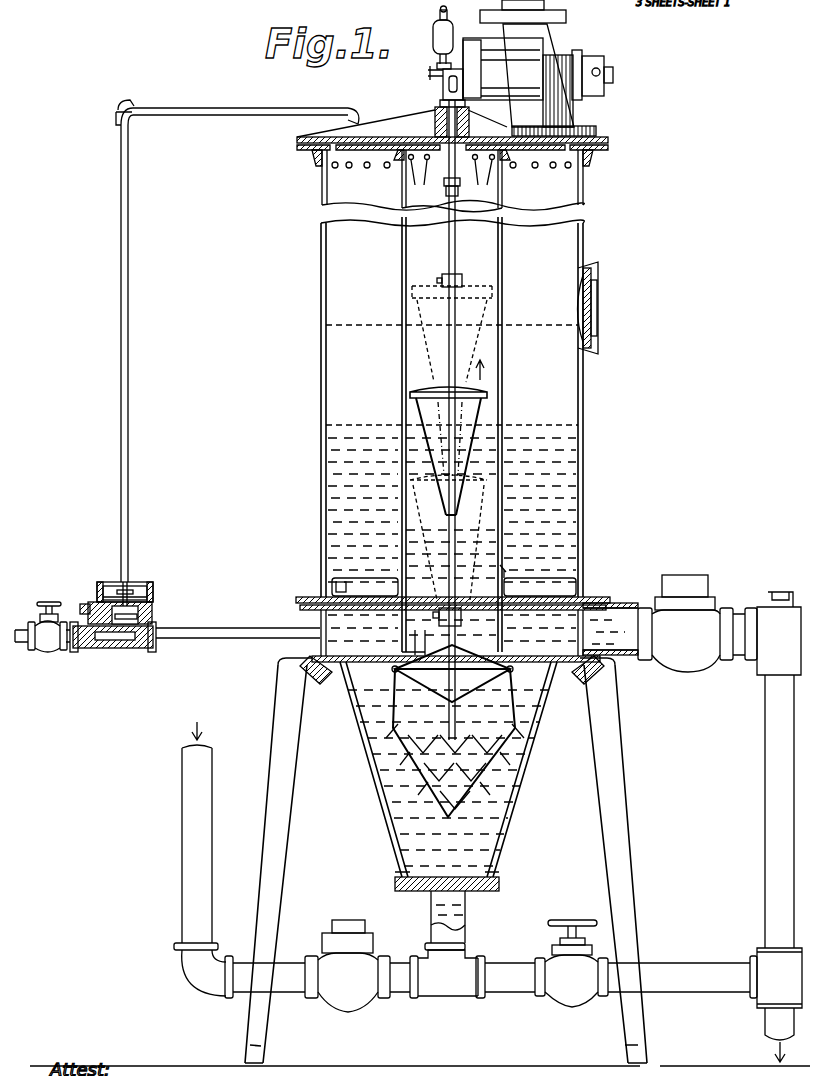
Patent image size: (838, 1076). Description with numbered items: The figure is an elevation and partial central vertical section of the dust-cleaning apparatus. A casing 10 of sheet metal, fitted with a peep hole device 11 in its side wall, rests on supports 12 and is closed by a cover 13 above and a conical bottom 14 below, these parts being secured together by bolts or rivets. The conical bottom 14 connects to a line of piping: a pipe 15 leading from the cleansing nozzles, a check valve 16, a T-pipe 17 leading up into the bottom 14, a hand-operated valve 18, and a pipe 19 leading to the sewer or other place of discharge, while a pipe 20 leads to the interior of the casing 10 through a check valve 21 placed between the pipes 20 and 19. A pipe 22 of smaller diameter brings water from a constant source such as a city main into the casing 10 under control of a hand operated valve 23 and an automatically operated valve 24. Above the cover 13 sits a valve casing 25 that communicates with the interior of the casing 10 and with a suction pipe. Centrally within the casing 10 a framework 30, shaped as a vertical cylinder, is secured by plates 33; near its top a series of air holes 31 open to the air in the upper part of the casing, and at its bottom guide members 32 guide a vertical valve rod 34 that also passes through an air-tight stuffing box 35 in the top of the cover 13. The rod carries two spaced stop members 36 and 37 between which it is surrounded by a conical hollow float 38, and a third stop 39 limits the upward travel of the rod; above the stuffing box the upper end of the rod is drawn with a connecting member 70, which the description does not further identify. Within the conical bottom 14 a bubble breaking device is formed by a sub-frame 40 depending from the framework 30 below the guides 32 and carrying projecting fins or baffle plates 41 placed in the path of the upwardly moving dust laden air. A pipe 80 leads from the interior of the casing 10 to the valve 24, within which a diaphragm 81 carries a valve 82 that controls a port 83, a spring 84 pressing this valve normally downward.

The casing 10 is at (580, 432).
The peep hole device 11 is at (590, 314).
The supports 12 is at (272, 840).
The cover 13 is at (415, 137).
The conical bottom 14 is at (505, 822).
The pipe 15 is at (203, 860).
The check valve 16 is at (347, 966).
The T-pipe 17 is at (447, 970).
The hand-operated valve 18 is at (571, 963).
The pipe 19 is at (779, 827).
The pipe 20 is at (618, 618).
The check valve 21 is at (697, 623).
The pipe 22 is at (192, 640).
The hand operated valve 23 is at (52, 636).
The automatically operated valve 24 is at (152, 608).
The valve casing 25 is at (538, 68).
The framework 30 is at (502, 388).
The air holes 31 is at (451, 180).
The guide members 32 is at (452, 673).
The plates 33 is at (376, 575).
The valve rod 34 is at (455, 246).
The stuffing box 35 is at (470, 125).
The stop member 36 is at (462, 279).
The stop member 37 is at (461, 620).
The conical hollow float 38 is at (414, 412).
The third stop 39 is at (446, 198).
The sub-frame 40 is at (490, 692).
The baffle plates 41 is at (470, 792).
The float 70 is at (443, 86).
The pipe 80 is at (192, 116).
The diaphragm 81 is at (135, 592).
The valve 82 is at (138, 624).
The port 83 is at (127, 649).
The spring 84 is at (110, 584).